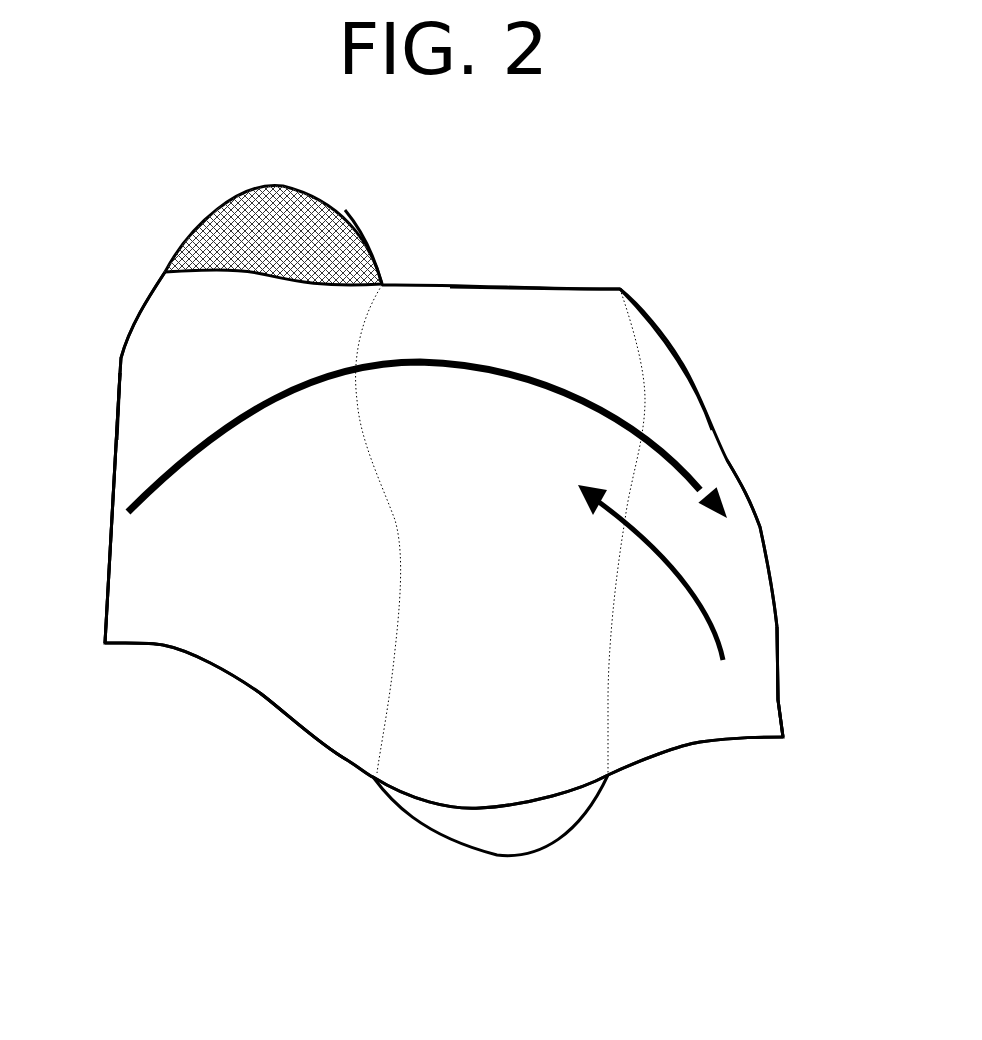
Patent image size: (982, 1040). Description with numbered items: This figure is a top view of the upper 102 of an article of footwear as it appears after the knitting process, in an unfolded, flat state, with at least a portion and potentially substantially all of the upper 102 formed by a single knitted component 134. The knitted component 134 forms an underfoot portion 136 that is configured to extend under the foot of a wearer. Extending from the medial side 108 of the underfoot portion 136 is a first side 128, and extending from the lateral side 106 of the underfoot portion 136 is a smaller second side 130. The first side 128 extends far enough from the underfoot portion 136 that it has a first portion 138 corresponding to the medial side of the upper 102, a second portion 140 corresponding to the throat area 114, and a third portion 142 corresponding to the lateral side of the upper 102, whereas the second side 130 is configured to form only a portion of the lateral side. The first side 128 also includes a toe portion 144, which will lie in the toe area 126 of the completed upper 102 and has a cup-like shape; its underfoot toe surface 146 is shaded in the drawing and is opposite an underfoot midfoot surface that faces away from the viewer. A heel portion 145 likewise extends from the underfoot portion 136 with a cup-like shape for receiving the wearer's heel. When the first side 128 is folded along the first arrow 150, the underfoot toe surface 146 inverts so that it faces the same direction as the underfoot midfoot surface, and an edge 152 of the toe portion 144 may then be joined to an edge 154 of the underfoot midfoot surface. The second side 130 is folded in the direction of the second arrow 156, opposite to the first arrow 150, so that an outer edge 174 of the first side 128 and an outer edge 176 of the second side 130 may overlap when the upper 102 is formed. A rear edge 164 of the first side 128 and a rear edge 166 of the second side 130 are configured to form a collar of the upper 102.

The upper 102 is at (136, 183).
The lateral side 106 is at (757, 700).
The medial side 108 is at (367, 750).
The throat area 114 is at (262, 650).
The toe area 126 is at (360, 232).
The first side 128 is at (183, 508).
The second side 130 is at (712, 682).
The knitted component 134 is at (680, 360).
The underfoot portion 136 is at (490, 708).
The first portion 138 is at (365, 715).
The second portion 140 is at (277, 657).
The third portion 142 is at (140, 632).
The toe portion 144 is at (267, 200).
The heel portion 145 is at (560, 827).
The underfoot toe surface 146 is at (316, 219).
The first arrow 150 is at (527, 375).
The edge of the toe portion 152 is at (255, 275).
The edge of the underfoot midfoot surface 154 is at (518, 288).
The second arrow 156 is at (700, 588).
The rear edge of the first side 164 is at (298, 732).
The rear edge of the second side 166 is at (672, 747).
The outer edge of the first side 174 is at (120, 370).
The outer edge of the second side 176 is at (757, 527).